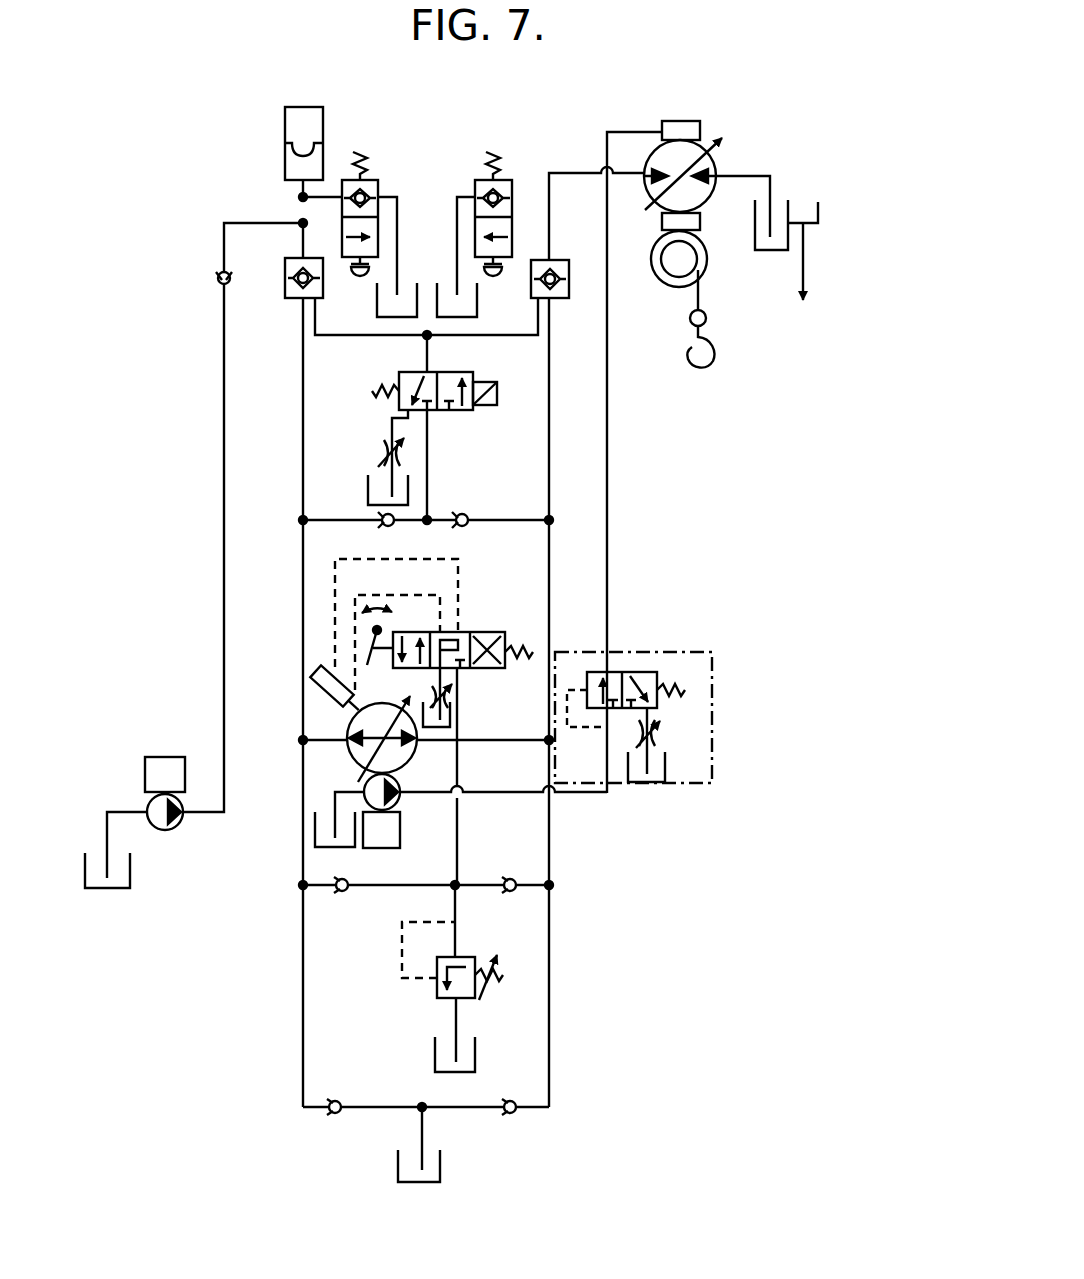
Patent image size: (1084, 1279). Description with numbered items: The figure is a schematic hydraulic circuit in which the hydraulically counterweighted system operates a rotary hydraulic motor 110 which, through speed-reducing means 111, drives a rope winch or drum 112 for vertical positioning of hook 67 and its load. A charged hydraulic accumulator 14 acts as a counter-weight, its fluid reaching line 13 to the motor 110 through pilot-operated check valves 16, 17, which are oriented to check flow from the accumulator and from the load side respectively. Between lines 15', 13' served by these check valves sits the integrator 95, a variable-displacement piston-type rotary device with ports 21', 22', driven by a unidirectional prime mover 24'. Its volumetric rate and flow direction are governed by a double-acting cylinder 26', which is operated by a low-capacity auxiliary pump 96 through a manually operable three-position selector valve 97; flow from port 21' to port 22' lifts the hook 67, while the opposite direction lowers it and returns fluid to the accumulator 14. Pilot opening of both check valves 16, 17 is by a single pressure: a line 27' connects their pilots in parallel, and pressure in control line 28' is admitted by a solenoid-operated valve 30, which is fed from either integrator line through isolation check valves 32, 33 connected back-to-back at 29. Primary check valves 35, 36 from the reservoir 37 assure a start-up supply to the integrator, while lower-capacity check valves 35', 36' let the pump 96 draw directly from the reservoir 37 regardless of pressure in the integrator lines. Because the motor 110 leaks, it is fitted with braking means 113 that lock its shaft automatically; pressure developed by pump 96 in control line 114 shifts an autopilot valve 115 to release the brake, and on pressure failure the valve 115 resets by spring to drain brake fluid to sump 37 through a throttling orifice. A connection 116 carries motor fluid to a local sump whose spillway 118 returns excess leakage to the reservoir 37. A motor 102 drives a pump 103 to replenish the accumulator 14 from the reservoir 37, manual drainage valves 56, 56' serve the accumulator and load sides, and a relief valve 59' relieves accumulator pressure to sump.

The hydraulic accumulator 14 is at (283, 126).
The pilot-operated check valve 16 is at (318, 258).
The pilot-operated check valve 17 is at (558, 260).
The drainage valve 56 is at (359, 223).
The drainage valve 56' is at (476, 223).
The hydraulic line 13 is at (588, 200).
The integrator port line 13' is at (574, 702).
The integrator port line 15' is at (275, 702).
The pilot connection line 27' is at (371, 336).
The control line 28' is at (480, 334).
The solenoid-operated valve 30 is at (458, 416).
The back-to-back connection 29 is at (432, 516).
The isolation check valve 32 is at (382, 527).
The isolation check valve 33 is at (467, 515).
The reservoir 37 is at (375, 303).
The three-position selector valve 97 is at (492, 630).
The double-acting cylinder 26' is at (305, 690).
The integrator port 21' is at (323, 726).
The integrator port 22' is at (482, 761).
The integrator 95 is at (392, 693).
The auxiliary pump 96 is at (366, 795).
The prime mover 24' is at (408, 834).
The pump motor 102 is at (150, 757).
The replenishment pump 103 is at (168, 830).
The check valve 35 is at (426, 1090).
The check valve 35' is at (426, 906).
The check valve 36 is at (498, 1091).
The check valve 36' is at (498, 905).
The relief valve 59' is at (434, 972).
The rotary hydraulic motor 110 is at (718, 158).
The speed-reducing means 111 is at (700, 222).
The rope winch 112 is at (672, 272).
The braking means 113 is at (686, 121).
The hook 67 is at (701, 372).
The sump connection 116 is at (771, 178).
The spillway 118 is at (800, 215).
The control line 114 is at (575, 793).
The autopilot valve 115 is at (715, 651).